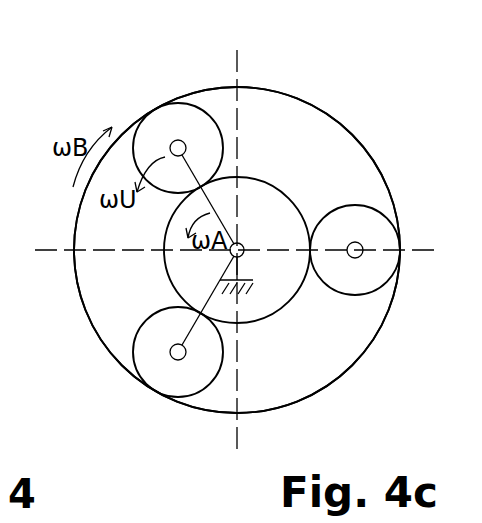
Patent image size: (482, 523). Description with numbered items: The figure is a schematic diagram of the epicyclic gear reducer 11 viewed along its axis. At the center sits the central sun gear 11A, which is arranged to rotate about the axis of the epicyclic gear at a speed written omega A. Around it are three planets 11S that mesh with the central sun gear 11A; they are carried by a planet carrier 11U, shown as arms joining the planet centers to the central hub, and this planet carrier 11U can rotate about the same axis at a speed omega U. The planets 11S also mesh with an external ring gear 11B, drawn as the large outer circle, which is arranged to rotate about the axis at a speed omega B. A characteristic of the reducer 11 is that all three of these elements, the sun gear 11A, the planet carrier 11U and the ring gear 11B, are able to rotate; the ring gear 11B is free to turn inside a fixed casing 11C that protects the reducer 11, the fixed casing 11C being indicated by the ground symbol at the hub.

The epicyclic gear reducer 11 is at (200, 73).
The central sun gear 11A is at (166, 275).
The external ring gear 11B is at (289, 107).
The fixed casing 11C is at (247, 297).
The planets 11S is at (135, 343).
The planet carrier 11U is at (241, 245).